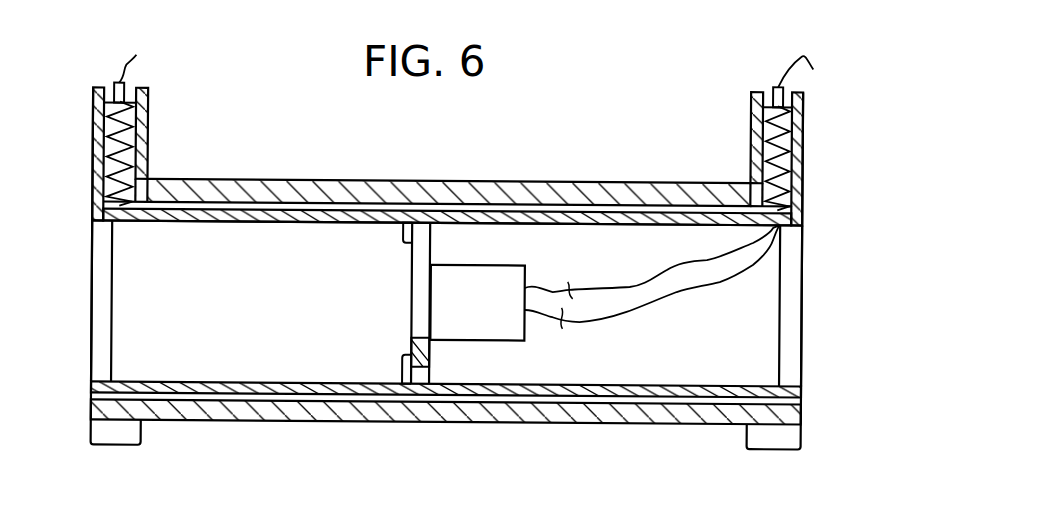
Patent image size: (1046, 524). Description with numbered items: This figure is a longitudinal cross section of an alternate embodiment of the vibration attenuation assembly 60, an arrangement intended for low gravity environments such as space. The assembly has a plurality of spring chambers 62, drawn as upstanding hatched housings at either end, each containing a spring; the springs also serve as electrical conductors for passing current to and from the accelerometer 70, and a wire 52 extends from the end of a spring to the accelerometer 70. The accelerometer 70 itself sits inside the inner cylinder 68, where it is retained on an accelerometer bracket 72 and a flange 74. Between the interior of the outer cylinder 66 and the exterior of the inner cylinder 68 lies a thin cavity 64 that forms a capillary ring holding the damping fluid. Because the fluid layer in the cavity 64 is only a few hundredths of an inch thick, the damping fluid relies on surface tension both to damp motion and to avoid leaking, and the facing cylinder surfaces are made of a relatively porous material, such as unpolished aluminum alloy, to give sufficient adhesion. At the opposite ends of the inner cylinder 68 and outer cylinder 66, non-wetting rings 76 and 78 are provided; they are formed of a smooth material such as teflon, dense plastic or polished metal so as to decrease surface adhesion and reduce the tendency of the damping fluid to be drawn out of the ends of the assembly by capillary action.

The wire 52 is at (693, 306).
The vibration attenuation assembly 60 is at (613, 136).
The spring chamber 62 is at (144, 157).
The cavity 64 is at (508, 208).
The outer cylinder 66 is at (258, 193).
The inner cylinder 68 is at (288, 391).
The accelerometer 70 is at (453, 330).
The accelerometer bracket 72 is at (420, 270).
The flange 74 is at (407, 373).
The non-wetting ring 76 is at (102, 294).
The non-wetting ring 78 is at (790, 248).